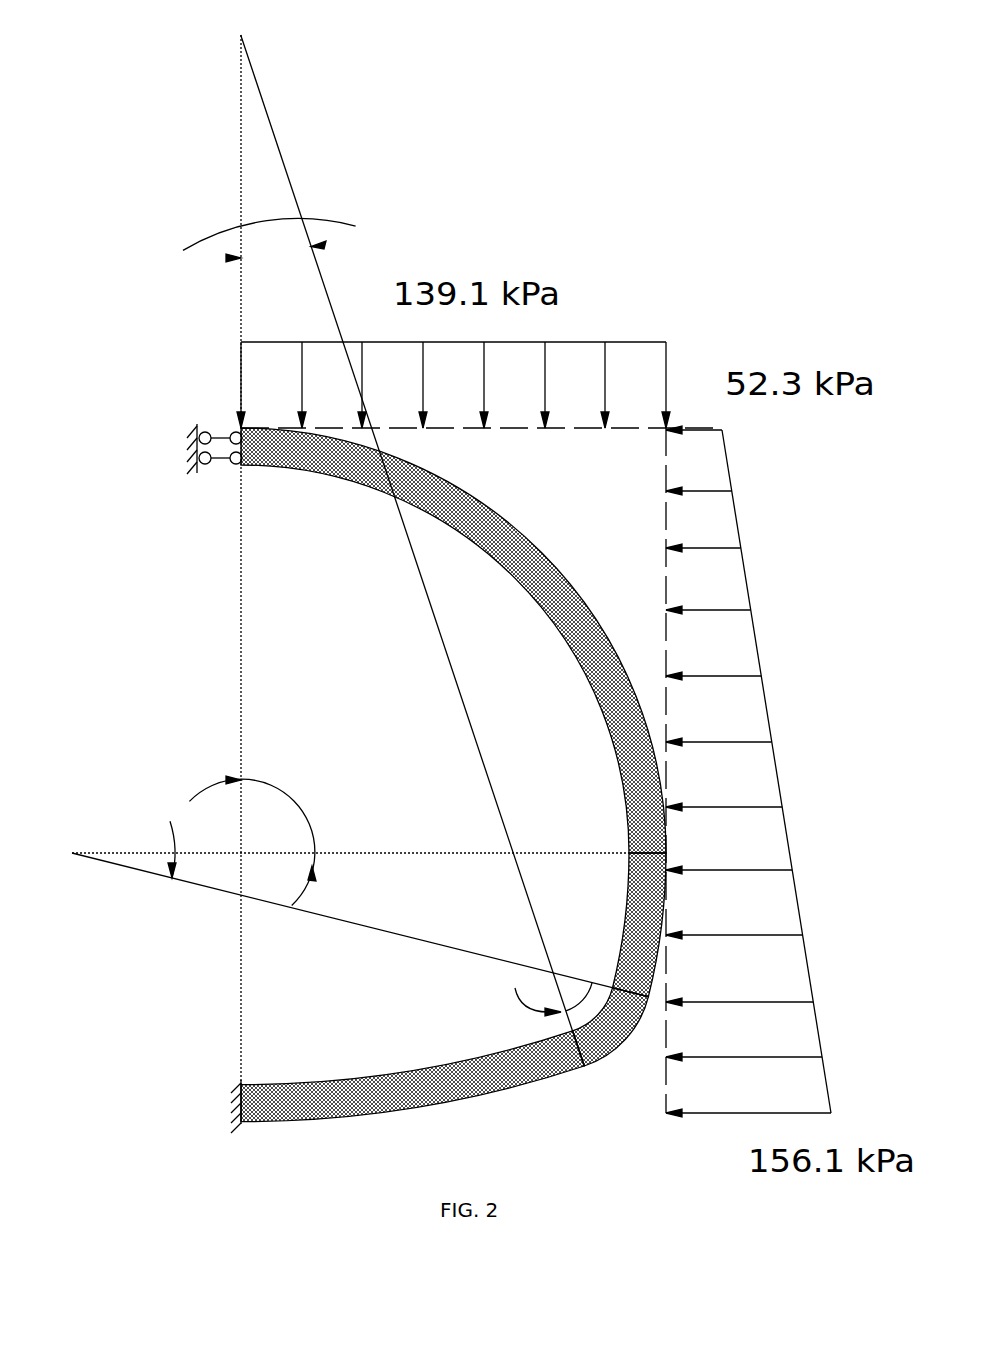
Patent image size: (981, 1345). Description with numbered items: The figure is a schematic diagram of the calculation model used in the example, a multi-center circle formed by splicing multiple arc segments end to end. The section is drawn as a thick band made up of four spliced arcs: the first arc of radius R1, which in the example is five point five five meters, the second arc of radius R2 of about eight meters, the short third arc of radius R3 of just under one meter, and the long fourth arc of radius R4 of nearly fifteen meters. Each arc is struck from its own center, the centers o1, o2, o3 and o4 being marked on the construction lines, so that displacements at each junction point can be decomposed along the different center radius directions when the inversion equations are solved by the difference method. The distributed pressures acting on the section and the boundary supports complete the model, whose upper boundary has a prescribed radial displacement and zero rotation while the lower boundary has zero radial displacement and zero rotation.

The first arc radius R1 is at (453, 640).
The second arc radius R2 is at (592, 970).
The third arc radius R3 is at (619, 1037).
The fourth arc radius R4 is at (412, 1074).
The center of arc R1 o1 is at (252, 841).
The center of arc R2 o2 is at (338, 907).
The center of arc R3 o3 is at (566, 984).
The center of arc R4 o4 is at (376, 536).